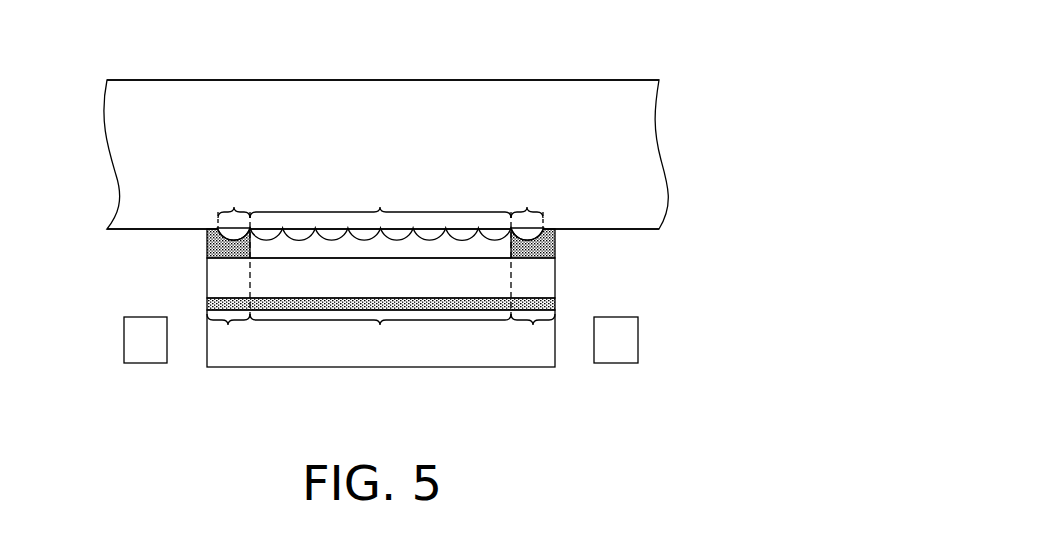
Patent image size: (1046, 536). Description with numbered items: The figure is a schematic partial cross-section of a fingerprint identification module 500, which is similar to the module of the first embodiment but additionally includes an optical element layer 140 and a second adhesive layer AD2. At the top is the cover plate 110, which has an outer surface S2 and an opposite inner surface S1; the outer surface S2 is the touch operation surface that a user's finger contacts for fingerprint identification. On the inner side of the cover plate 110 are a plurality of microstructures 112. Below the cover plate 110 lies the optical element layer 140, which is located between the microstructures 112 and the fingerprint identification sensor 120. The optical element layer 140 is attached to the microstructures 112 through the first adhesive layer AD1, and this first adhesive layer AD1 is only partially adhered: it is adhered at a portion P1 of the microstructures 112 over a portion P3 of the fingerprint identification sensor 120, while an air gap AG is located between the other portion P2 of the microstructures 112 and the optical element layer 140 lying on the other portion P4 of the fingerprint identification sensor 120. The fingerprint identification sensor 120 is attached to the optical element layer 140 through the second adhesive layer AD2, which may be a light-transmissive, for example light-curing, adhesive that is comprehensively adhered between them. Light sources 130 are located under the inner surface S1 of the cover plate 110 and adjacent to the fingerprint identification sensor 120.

The fingerprint identification module 500 is at (766, 442).
The cover plate 110 is at (618, 153).
The inner surface S1 is at (642, 230).
The outer surface S2 is at (602, 79).
The microstructures 112 is at (430, 237).
The air gap AG is at (297, 246).
The first adhesive layer AD1 is at (207, 244).
The second adhesive layer AD2 is at (207, 305).
The optical element layer 140 is at (228, 280).
The fingerprint identification sensor 120 is at (490, 355).
The light source 130 is at (135, 337).
The portion of the microstructures P1 is at (380, 196).
The other portion of the microstructures P2 is at (380, 196).
The portion of the fingerprint identification sensor P3 is at (381, 335).
The other portion of the fingerprint identification sensor P4 is at (380, 335).